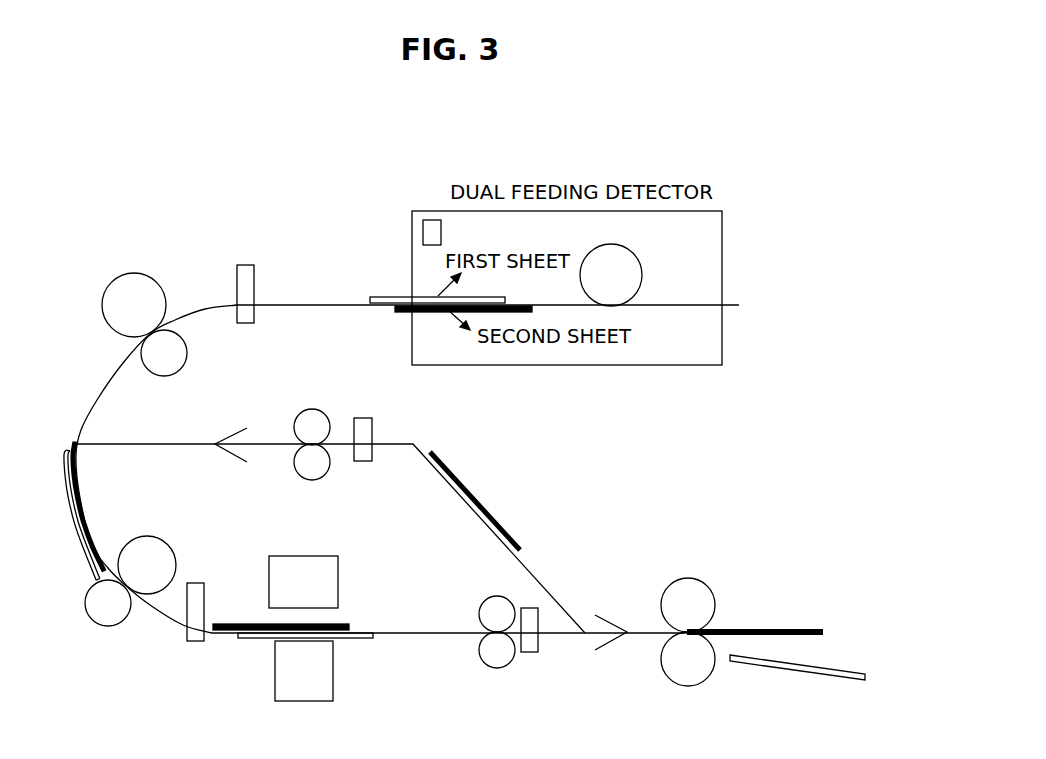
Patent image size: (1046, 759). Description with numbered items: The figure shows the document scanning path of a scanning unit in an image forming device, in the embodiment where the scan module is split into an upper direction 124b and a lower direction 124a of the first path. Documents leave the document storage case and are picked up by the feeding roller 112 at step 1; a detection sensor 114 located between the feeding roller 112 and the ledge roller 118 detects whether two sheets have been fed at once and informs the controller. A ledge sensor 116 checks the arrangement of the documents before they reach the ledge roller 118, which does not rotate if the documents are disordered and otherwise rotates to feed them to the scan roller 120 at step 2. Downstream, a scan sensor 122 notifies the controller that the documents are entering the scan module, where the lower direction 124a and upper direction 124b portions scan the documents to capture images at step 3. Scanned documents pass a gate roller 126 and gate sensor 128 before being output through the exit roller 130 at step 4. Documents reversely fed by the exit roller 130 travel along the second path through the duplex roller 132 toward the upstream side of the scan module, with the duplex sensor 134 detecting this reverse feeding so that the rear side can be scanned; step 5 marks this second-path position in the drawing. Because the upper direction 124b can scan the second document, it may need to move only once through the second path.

The feeding roller 112 is at (637, 251).
The detection sensor 114 is at (433, 220).
The ledge sensor 116 is at (245, 265).
The ledge roller 118 is at (124, 276).
The scan roller 120 is at (108, 620).
The scan sensor 122 is at (197, 641).
The lower direction scan module 124a is at (333, 672).
The upper direction scan module 124b is at (338, 582).
The gate roller 126 is at (497, 669).
The gate sensor 128 is at (530, 653).
The exit roller 130 is at (688, 687).
The duplex roller 132 is at (312, 481).
The duplex sensor 134 is at (363, 462).
The feeding step 1 is at (448, 288).
The ledge roller feeding step 2 is at (71, 511).
The scanning step 3 is at (293, 616).
The output step 4 is at (776, 635).
The fifth sheet position 5 is at (475, 501).